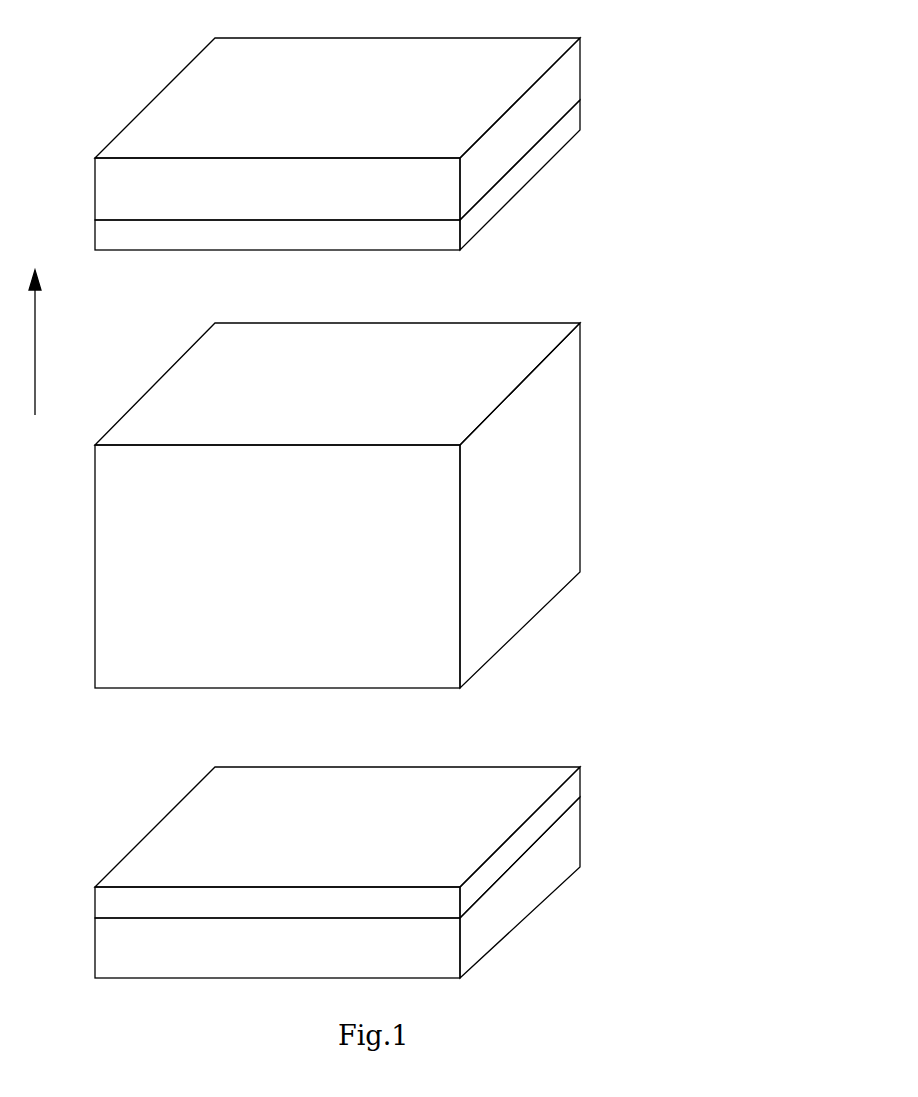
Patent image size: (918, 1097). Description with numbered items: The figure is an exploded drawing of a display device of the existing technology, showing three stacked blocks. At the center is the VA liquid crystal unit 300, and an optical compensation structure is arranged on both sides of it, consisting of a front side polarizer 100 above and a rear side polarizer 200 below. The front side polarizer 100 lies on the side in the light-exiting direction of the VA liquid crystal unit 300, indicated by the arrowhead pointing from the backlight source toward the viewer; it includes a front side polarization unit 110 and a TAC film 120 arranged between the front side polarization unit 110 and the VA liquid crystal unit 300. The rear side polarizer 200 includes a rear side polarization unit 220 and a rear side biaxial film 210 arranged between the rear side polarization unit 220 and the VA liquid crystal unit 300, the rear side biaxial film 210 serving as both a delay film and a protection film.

The front side polarizer 100 is at (448, 144).
The front side polarization unit 110 is at (552, 87).
The TAC film 120 is at (570, 123).
The rear side polarizer 200 is at (443, 869).
The rear side biaxial film 210 is at (570, 790).
The rear side polarization unit 220 is at (570, 857).
The VA liquid crystal unit 300 is at (552, 492).